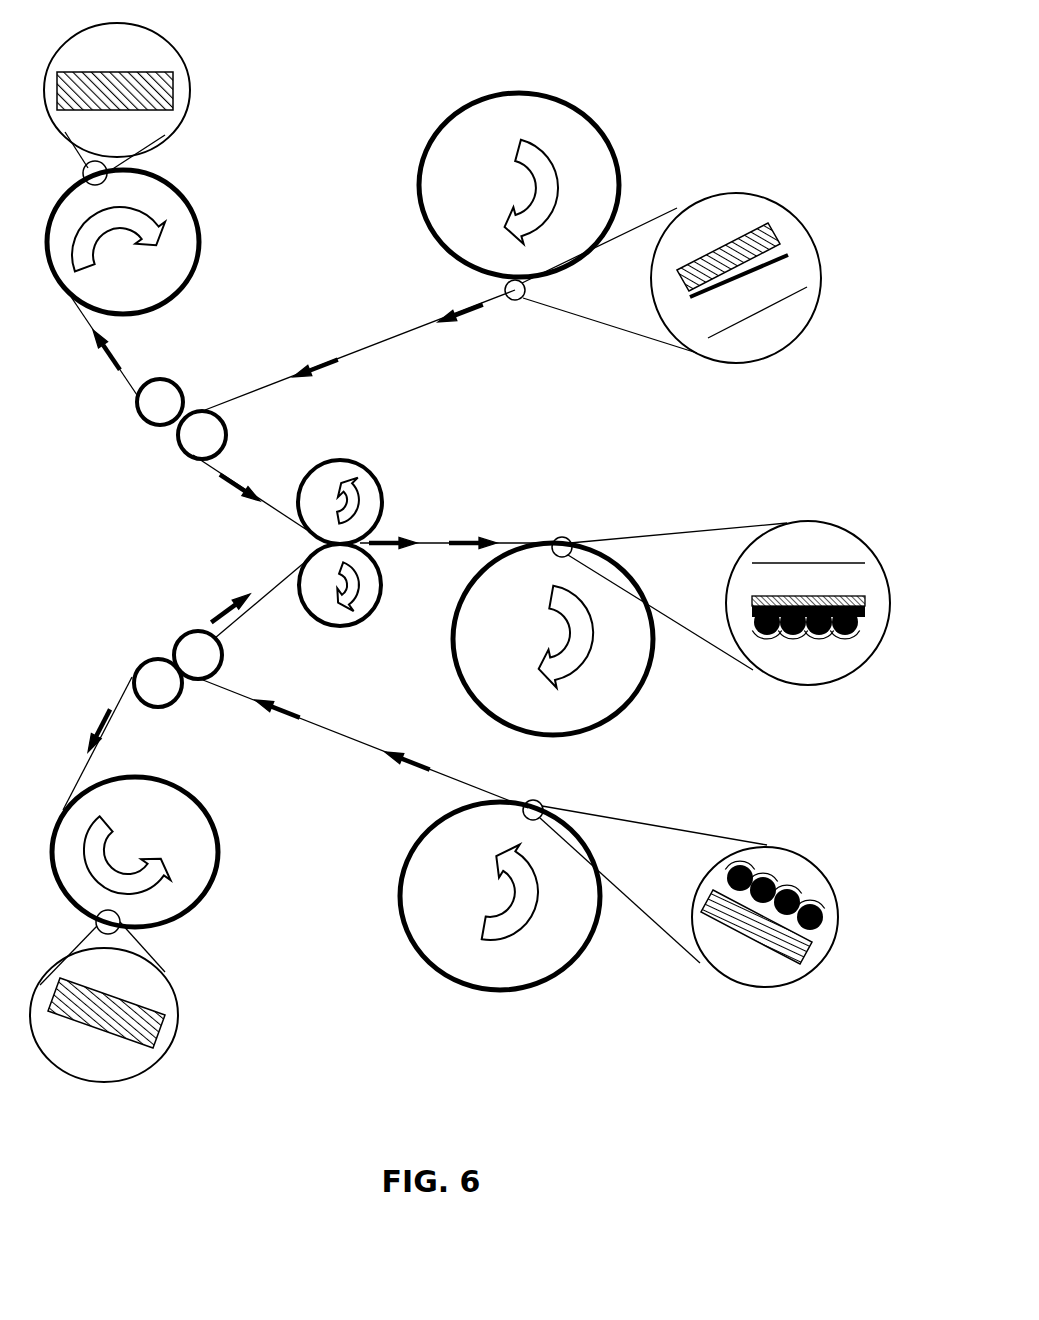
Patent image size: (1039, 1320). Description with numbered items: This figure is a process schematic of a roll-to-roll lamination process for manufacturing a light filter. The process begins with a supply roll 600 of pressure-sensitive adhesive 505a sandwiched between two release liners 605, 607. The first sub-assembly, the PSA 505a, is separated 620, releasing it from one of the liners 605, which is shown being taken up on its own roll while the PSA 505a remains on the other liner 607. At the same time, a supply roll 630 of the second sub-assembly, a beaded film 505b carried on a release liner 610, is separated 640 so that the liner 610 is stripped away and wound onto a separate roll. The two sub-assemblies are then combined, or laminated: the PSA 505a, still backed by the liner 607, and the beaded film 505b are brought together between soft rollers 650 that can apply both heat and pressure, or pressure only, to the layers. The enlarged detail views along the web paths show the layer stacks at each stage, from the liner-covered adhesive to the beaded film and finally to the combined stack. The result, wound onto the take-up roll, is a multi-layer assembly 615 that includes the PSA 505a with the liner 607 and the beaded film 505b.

The supply roll 600 is at (519, 185).
The release liner 605 is at (418, 165).
The release liner 607 is at (786, 441).
The pressure-sensitive adhesive 505a is at (792, 240).
The beaded film 505b is at (865, 628).
The release liner 610 is at (430, 969).
The multi-layer assembly 615 is at (553, 639).
The separation of first sub-assembly 620 is at (160, 437).
The supply roll 630 is at (500, 896).
The separation of second sub-assembly 640 is at (167, 653).
The soft rollers 650 is at (305, 530).